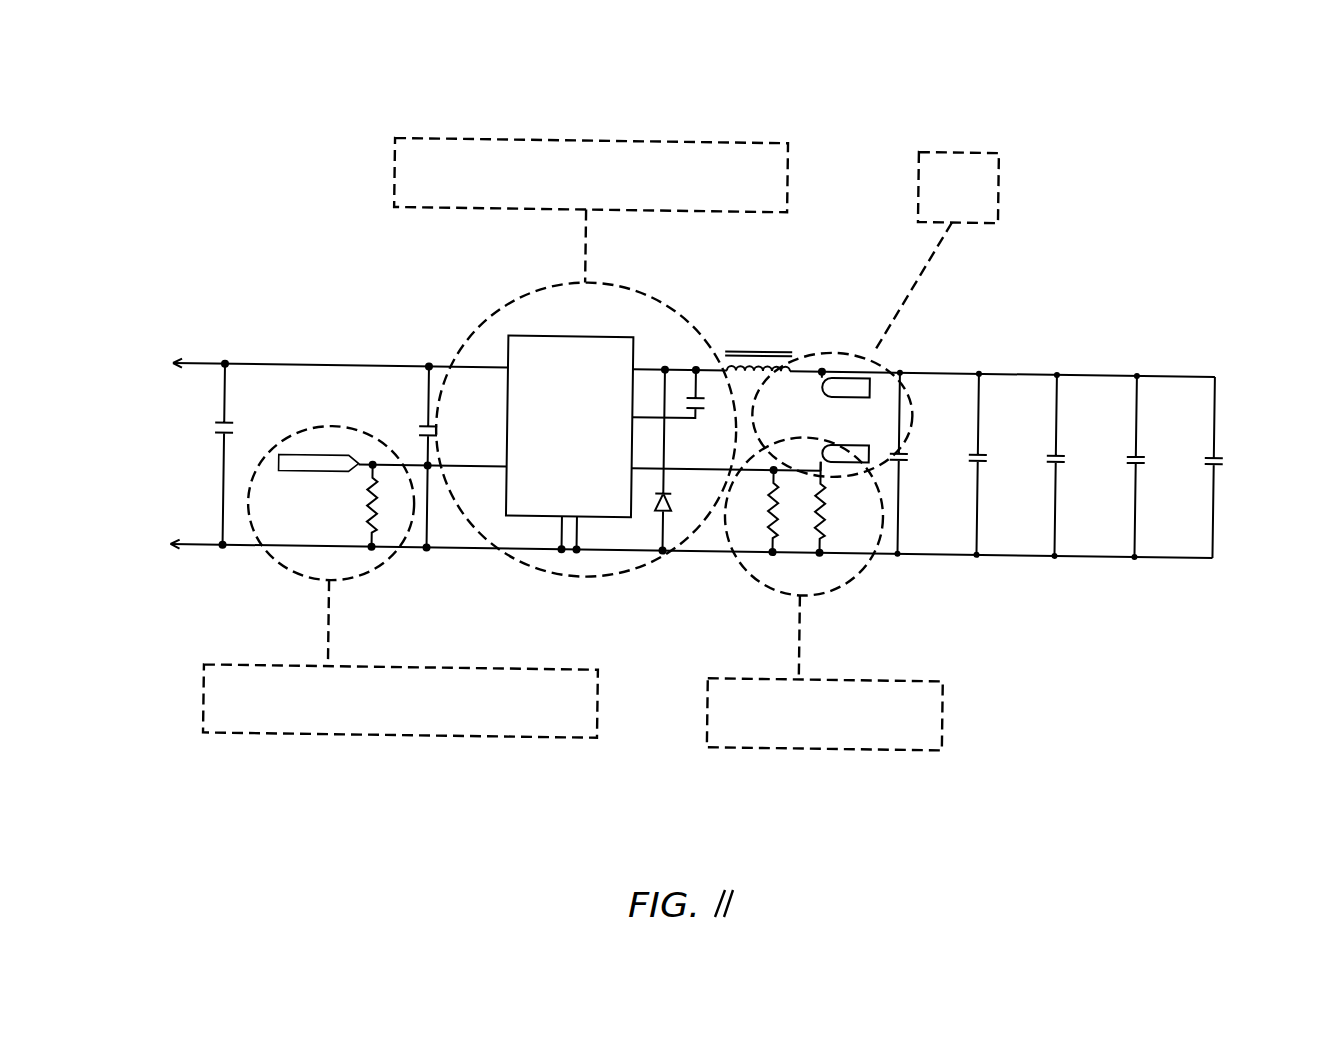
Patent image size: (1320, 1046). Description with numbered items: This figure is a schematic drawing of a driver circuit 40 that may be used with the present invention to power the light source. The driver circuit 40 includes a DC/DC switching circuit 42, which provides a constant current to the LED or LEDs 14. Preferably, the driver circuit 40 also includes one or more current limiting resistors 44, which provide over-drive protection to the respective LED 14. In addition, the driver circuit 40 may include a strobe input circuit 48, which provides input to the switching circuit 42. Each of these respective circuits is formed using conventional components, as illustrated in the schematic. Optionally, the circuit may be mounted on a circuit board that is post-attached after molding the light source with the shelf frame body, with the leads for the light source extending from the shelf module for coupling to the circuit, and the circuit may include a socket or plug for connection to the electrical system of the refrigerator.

The driver circuit 40 is at (977, 72).
The DC/DC switching circuit 42 is at (440, 317).
The current limiting resistors 44 is at (864, 584).
The strobe input circuit 48 is at (261, 580).
The LED 14 is at (866, 436).